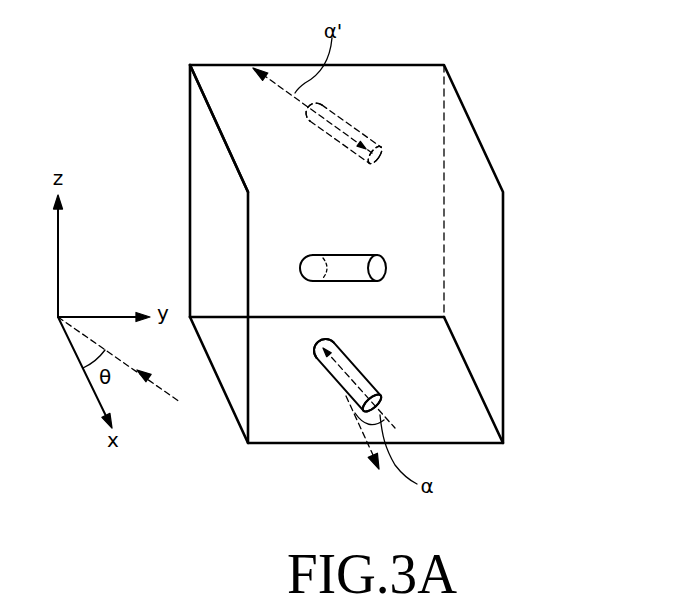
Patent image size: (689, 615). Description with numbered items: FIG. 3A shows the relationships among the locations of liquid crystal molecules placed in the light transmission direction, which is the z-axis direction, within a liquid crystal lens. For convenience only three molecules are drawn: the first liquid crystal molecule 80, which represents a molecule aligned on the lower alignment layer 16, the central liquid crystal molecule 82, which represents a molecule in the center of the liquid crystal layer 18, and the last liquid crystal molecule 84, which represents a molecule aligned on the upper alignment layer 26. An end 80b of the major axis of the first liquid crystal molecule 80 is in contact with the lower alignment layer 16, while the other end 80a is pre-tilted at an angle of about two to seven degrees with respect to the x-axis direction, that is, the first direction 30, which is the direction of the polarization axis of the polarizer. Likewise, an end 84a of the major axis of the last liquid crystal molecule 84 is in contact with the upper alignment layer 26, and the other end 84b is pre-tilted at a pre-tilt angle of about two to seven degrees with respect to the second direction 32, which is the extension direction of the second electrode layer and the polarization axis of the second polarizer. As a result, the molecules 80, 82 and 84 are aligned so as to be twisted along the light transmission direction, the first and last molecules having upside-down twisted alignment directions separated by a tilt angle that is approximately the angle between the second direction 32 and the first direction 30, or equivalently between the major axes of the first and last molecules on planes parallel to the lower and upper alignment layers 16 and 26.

The lower alignment layer 16 is at (465, 355).
The liquid crystal layer 18 is at (488, 253).
The upper alignment layer 26 is at (485, 145).
The first direction 30 is at (355, 415).
The second direction 32 is at (282, 88).
The first liquid crystal molecule 80 is at (340, 372).
The other end of the first liquid crystal molecule 80a is at (386, 398).
The end of the first liquid crystal molecule 80b is at (318, 348).
The central liquid crystal molecule 82 is at (357, 254).
The last liquid crystal molecule 84 is at (325, 133).
The end of the last liquid crystal molecule 84a is at (385, 149).
The other end of the last liquid crystal molecule 84b is at (312, 128).